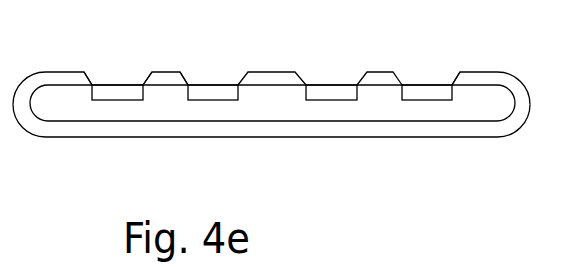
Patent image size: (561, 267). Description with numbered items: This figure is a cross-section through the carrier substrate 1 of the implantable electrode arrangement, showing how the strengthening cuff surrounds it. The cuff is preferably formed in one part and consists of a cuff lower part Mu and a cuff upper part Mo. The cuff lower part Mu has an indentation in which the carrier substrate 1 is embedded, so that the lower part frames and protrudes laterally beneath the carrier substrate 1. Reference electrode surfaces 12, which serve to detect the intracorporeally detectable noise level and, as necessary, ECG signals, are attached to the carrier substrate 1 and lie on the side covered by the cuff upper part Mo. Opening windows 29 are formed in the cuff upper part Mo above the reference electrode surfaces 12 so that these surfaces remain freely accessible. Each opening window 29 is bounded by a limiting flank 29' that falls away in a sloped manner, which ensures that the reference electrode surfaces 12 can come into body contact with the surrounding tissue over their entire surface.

The carrier substrate 1 is at (263, 98).
The reference electrode surfaces 12 is at (117, 82).
The opening windows 29 is at (317, 55).
The limiting flank 29' is at (283, 47).
The cuff upper part Mo is at (60, 72).
The cuff lower part Mu is at (112, 137).